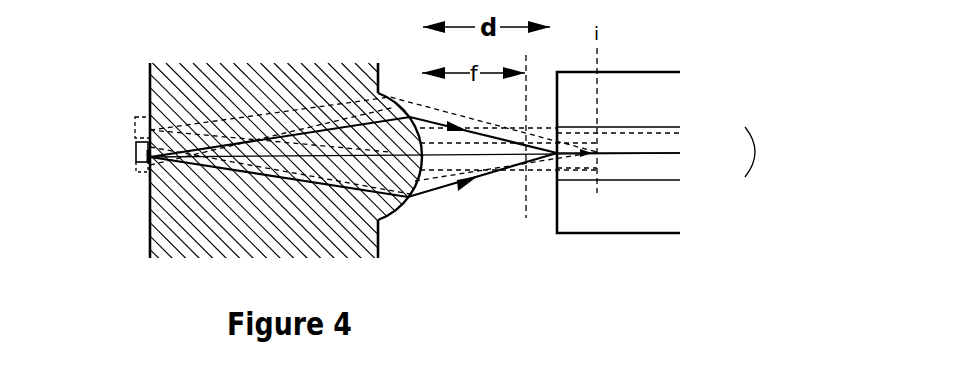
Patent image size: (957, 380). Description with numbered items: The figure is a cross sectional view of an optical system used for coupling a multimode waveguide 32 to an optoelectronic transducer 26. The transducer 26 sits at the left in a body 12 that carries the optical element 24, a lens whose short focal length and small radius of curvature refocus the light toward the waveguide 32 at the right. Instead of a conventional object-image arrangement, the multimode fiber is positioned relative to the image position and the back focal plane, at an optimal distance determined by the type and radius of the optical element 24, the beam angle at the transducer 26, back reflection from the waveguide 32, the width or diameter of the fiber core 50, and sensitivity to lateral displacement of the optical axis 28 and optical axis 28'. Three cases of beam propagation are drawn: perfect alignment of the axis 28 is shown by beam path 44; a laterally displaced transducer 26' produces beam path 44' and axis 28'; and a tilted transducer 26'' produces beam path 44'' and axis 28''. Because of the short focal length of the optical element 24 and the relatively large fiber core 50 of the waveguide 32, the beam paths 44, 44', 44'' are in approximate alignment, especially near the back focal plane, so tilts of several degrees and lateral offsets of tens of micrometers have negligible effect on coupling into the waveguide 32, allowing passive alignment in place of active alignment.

The housing block 12 is at (227, 85).
The optical element 24 is at (420, 130).
The optoelectronic transducer 26 is at (376, 179).
The laterally displaced optoelectronic transducer 26' is at (119, 105).
The tilted optoelectronic transducer 26'' is at (107, 151).
The optical axis 28 is at (644, 142).
The optical axis for lateral displacement 28' is at (634, 99).
The optical axis for tilt 28'' is at (647, 135).
The waveguide 32 is at (657, 235).
The beam path 44 is at (353, 187).
The beam path for lateral displacement 44' is at (373, 187).
The beam path for tilt 44'' is at (405, 194).
The fiber core 50 is at (773, 152).